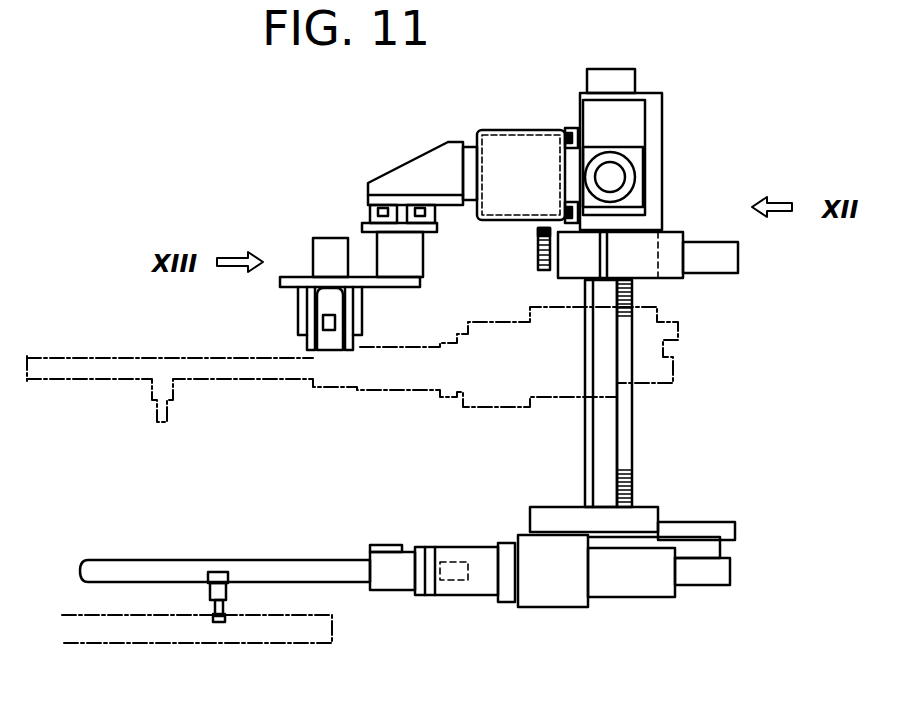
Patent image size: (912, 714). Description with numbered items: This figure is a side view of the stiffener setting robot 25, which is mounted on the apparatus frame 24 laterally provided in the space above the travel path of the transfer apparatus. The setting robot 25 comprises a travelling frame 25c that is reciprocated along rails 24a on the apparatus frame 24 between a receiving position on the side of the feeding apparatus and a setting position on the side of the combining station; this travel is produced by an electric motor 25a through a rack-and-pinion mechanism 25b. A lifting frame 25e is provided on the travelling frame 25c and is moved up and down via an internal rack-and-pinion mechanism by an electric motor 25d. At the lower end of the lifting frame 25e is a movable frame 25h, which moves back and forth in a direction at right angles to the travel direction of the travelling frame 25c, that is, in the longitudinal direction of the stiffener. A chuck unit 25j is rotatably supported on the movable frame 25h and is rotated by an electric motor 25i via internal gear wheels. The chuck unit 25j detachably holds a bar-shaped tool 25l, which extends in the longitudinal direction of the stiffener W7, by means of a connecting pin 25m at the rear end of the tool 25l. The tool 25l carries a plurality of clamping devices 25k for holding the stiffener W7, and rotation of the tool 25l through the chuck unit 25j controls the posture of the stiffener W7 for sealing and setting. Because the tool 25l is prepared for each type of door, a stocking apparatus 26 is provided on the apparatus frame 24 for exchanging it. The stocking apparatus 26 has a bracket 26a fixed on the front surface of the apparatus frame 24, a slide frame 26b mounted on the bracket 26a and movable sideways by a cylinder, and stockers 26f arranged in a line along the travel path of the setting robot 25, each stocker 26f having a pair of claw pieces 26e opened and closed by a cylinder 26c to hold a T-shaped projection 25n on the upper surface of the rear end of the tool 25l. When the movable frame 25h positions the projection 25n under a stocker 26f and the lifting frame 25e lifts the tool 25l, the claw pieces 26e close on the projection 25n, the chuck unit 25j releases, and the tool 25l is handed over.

The apparatus frame 24 is at (505, 130).
The rails 24a is at (566, 212).
The setting robot 25 is at (570, 342).
The electric motor 25a is at (672, 242).
The rack-and-pinion mechanism 25b is at (537, 238).
The travelling frame 25c is at (653, 120).
The electric motor 25d is at (612, 177).
The lifting frame 25e is at (608, 425).
The movable frame 25h is at (710, 540).
The electric motor 25i is at (636, 580).
The chuck unit 25j is at (466, 565).
The clamping devices 25k is at (219, 621).
The bar-shaped tool 25l is at (273, 379).
The connecting pin 25m is at (462, 560).
The T-shaped projection 25n is at (385, 545).
The stocking apparatus 26 is at (346, 265).
The bracket 26a is at (440, 167).
The slide frame 26b is at (403, 282).
The cylinder 26c is at (327, 250).
The claw pieces 26e is at (330, 340).
The stocker 26f is at (297, 363).
The stiffener W7 is at (127, 645).